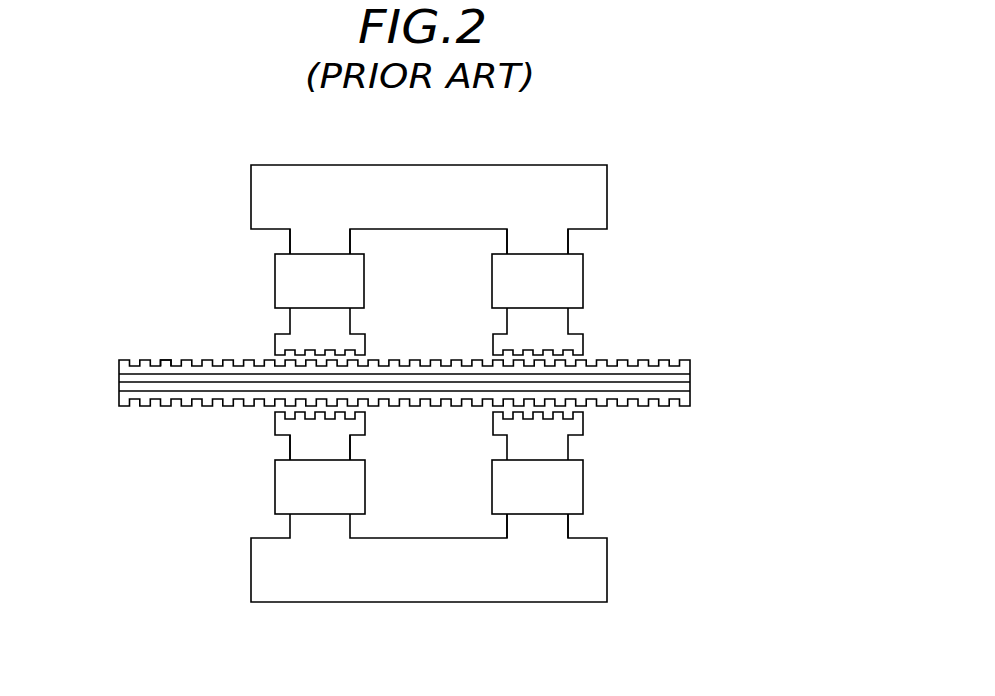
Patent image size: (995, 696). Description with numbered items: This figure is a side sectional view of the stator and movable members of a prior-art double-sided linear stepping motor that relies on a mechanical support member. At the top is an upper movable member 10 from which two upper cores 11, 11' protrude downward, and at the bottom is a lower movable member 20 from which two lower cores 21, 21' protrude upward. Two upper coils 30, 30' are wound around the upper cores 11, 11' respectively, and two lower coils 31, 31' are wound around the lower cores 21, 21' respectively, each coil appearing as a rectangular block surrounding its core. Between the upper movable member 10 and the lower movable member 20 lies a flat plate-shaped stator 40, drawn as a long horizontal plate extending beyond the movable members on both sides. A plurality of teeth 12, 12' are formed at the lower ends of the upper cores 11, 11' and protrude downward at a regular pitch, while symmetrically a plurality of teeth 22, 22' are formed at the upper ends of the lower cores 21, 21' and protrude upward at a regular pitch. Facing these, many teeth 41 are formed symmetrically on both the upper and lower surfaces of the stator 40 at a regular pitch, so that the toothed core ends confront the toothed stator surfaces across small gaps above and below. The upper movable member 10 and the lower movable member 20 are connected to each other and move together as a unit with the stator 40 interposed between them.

The upper movable member 10 is at (310, 172).
The upper core 11 is at (281, 240).
The upper core 11' is at (576, 241).
The teeth 12 is at (351, 331).
The teeth 12' is at (575, 331).
The lower movable member 20 is at (427, 597).
The lower core 21 is at (280, 452).
The lower core 21' is at (580, 526).
The teeth 22 is at (277, 435).
The teeth 22' is at (573, 435).
The upper coil 30 is at (287, 281).
The upper coil 30' is at (575, 281).
The lower coil 31 is at (320, 556).
The lower coil 31' is at (575, 487).
The stator 40 is at (118, 376).
The teeth 41 is at (162, 360).